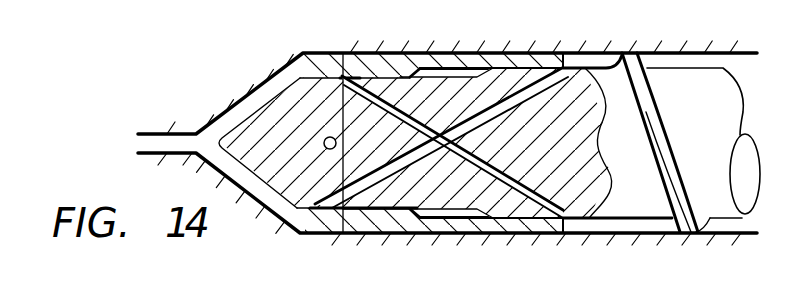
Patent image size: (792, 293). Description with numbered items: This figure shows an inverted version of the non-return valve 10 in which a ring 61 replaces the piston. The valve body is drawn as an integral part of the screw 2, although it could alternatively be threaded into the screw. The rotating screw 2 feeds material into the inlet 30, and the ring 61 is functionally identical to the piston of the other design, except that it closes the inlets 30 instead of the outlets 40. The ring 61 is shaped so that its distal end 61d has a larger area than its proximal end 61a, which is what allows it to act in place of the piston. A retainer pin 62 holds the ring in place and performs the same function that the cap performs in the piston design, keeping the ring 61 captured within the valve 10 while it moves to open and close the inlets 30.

The non-return valve 10 is at (233, 110).
The retainer pin 62 is at (324, 137).
The inlet 30 is at (554, 67).
The distal end of ring 61d is at (336, 60).
The ring 61 is at (372, 60).
The proximal end of ring 61a is at (597, 52).
The screw 2 is at (713, 158).
The outlet 40 is at (330, 209).